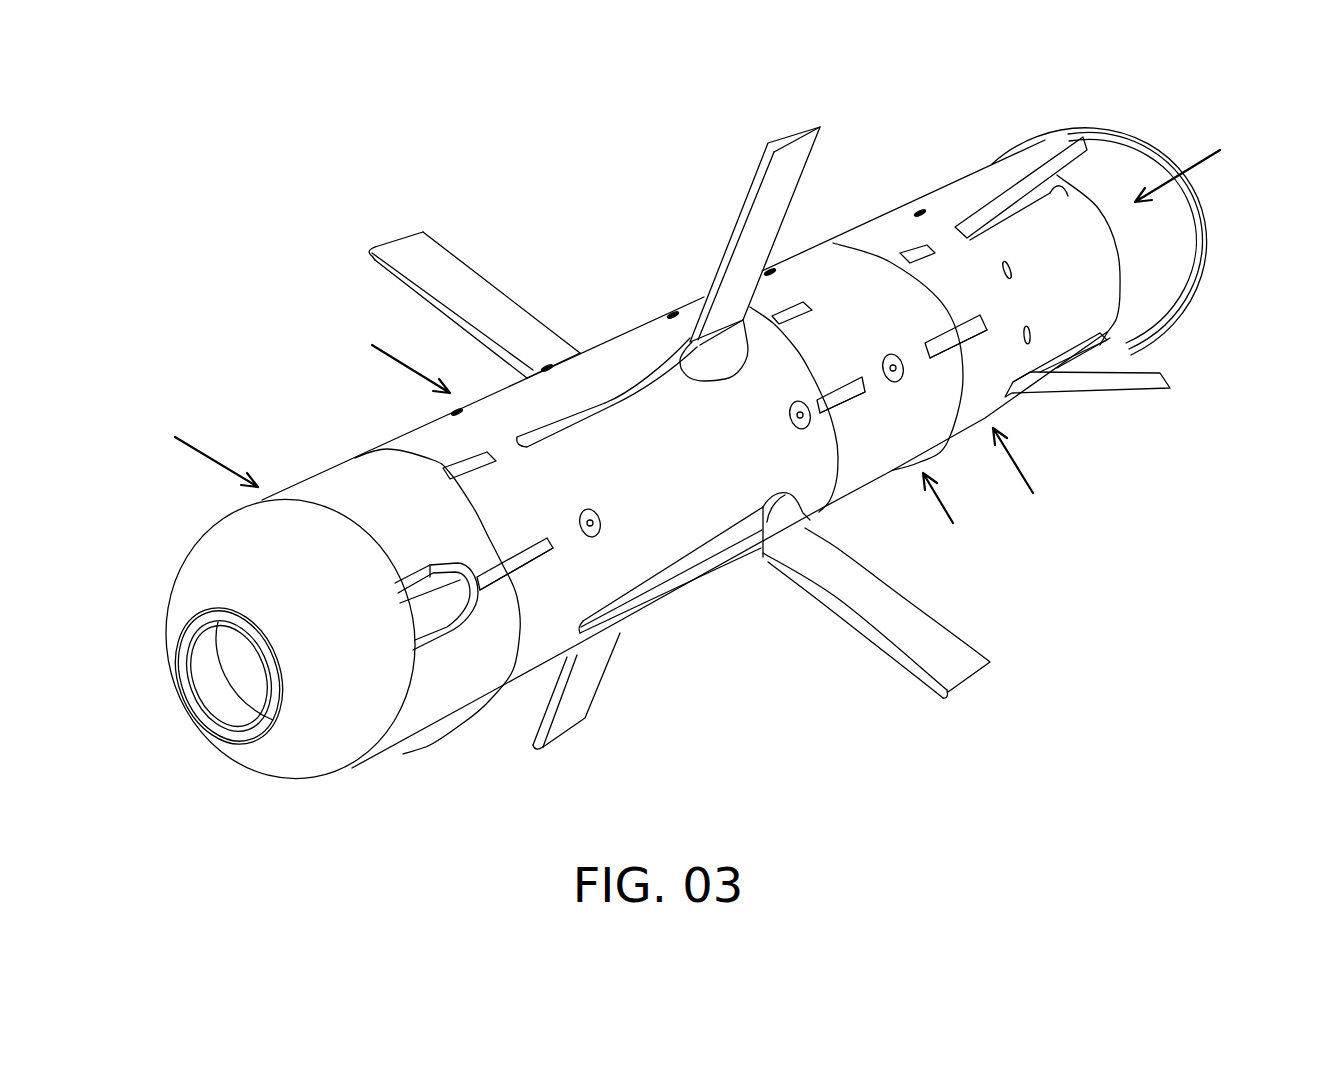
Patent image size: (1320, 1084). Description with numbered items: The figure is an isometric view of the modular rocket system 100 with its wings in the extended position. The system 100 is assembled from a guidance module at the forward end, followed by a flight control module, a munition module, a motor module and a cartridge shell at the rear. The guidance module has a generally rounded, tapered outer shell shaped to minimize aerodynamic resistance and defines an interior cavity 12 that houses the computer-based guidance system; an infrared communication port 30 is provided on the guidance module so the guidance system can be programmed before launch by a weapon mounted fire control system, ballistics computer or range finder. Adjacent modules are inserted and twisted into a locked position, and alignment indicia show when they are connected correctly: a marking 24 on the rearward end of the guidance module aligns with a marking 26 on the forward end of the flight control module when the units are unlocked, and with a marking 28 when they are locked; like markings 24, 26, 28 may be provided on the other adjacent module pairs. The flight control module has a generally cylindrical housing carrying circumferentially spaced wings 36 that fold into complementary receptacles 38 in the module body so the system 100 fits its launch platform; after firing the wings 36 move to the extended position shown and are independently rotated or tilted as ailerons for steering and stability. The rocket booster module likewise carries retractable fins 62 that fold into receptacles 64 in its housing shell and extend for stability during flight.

The modular rocket system 100 is at (173, 241).
The interior cavity 12 is at (250, 665).
The marking 24 is at (495, 575).
The marking 26 is at (460, 473).
The marking 28 is at (533, 558).
The infrared communication port 30 is at (435, 607).
The wings 36 is at (443, 270).
The receptacles 38 is at (615, 397).
The fins 62 is at (1100, 385).
The receptacles 64 is at (1100, 336).